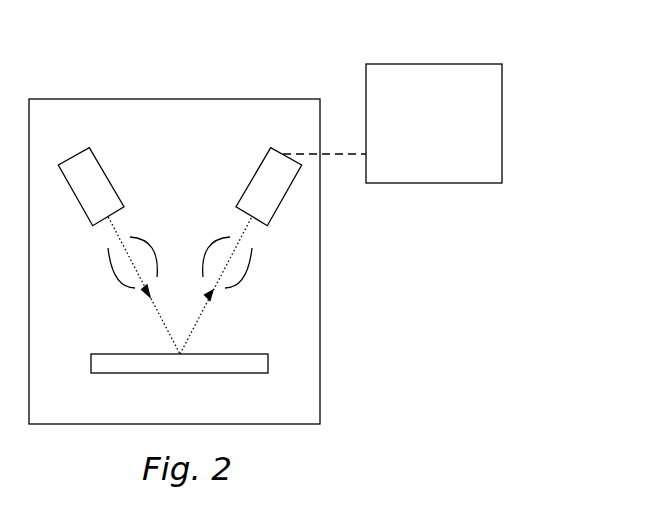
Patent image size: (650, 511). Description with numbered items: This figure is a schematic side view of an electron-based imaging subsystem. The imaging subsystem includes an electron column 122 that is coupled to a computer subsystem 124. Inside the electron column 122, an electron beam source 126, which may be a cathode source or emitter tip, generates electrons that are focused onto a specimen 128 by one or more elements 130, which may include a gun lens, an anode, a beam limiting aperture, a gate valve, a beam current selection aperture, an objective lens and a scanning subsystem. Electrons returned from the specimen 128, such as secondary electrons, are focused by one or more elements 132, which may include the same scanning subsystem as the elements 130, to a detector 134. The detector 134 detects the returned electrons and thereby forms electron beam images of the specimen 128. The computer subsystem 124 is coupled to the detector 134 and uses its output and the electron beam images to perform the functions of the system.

The electron column 122 is at (163, 98).
The computer subsystem 124 is at (453, 163).
The electron beam source 126 is at (97, 159).
The specimen 128 is at (225, 353).
The one or more elements 130 is at (118, 278).
The one or more elements 132 is at (248, 278).
The detector 134 is at (265, 160).